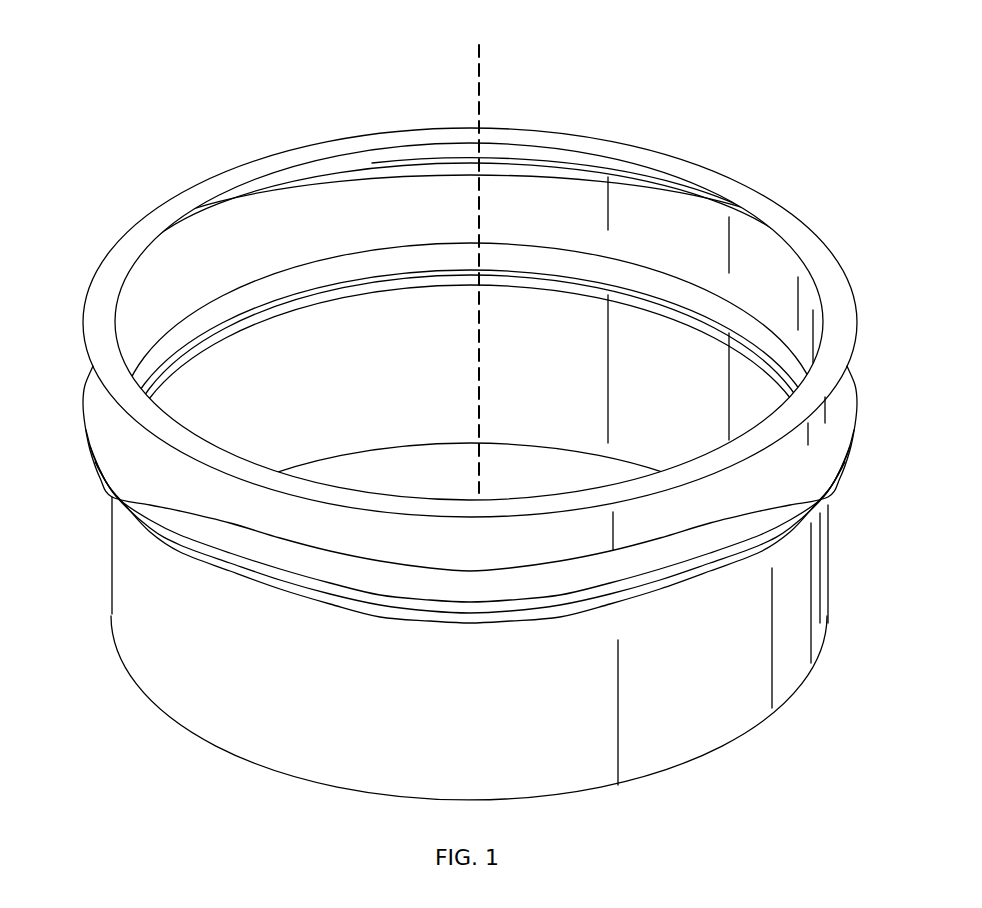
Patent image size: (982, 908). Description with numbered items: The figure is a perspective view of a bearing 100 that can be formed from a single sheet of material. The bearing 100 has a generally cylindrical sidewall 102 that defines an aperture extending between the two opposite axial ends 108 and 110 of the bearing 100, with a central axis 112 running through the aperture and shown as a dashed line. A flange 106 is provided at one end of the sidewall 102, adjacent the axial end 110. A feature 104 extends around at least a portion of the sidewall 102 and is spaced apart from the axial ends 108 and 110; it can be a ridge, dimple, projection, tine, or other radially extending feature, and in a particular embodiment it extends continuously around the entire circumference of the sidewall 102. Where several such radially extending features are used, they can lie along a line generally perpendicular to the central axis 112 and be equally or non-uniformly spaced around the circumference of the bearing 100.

The bearing 100 is at (133, 59).
The sidewall 102 is at (683, 717).
The feature 104 is at (835, 450).
The flange 106 is at (753, 192).
The axial end 108 is at (175, 718).
The axial end 110 is at (307, 145).
The central axis 112 is at (480, 72).